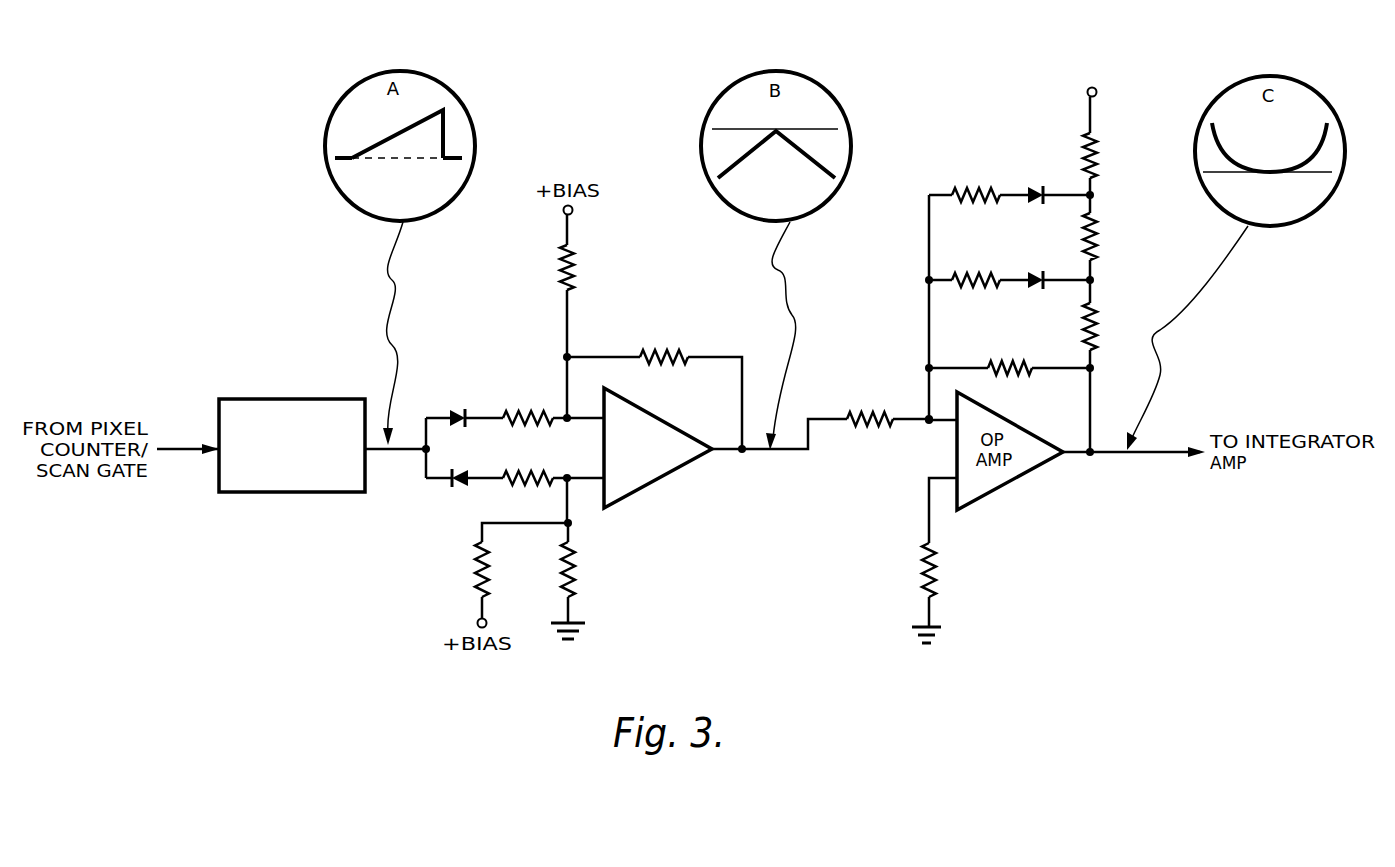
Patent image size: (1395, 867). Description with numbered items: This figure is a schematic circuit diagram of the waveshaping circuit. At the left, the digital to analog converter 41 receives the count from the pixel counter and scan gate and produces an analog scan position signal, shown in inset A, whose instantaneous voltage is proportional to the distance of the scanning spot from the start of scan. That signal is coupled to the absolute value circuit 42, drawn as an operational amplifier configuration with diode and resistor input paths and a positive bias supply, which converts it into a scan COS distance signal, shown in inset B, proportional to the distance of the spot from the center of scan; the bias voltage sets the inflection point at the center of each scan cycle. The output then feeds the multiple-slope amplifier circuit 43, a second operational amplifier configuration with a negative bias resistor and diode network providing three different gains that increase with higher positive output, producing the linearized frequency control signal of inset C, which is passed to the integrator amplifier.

The digital to analog converter circuit 41 is at (316, 493).
The absolute value circuit 42 is at (651, 498).
The multiple-slope amplifier circuit 43 is at (1131, 127).